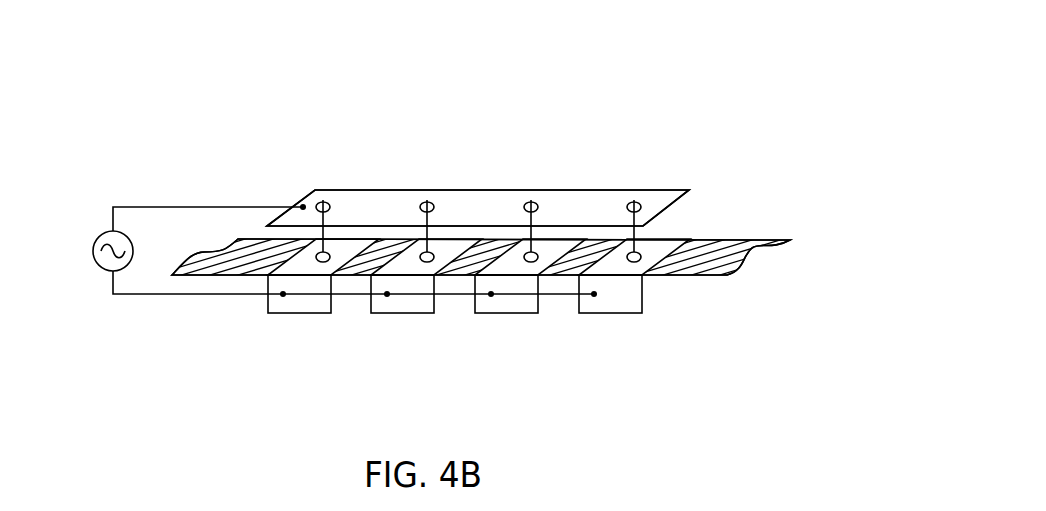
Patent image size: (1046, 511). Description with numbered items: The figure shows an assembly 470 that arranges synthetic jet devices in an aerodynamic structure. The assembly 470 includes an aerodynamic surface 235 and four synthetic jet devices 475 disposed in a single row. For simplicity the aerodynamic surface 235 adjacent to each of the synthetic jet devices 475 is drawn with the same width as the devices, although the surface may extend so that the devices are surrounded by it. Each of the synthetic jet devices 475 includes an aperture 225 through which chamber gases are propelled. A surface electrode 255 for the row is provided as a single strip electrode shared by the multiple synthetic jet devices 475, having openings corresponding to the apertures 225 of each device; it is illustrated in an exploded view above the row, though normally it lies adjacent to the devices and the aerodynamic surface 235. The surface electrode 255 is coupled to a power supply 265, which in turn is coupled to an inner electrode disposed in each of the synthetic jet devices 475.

The assembly 470 is at (633, 48).
The surface electrode 255 is at (582, 189).
The aerodynamic surface 235 is at (748, 242).
The aperture 225 is at (440, 249).
The synthetic jet devices 475 is at (297, 319).
The power supply 265 is at (92, 249).